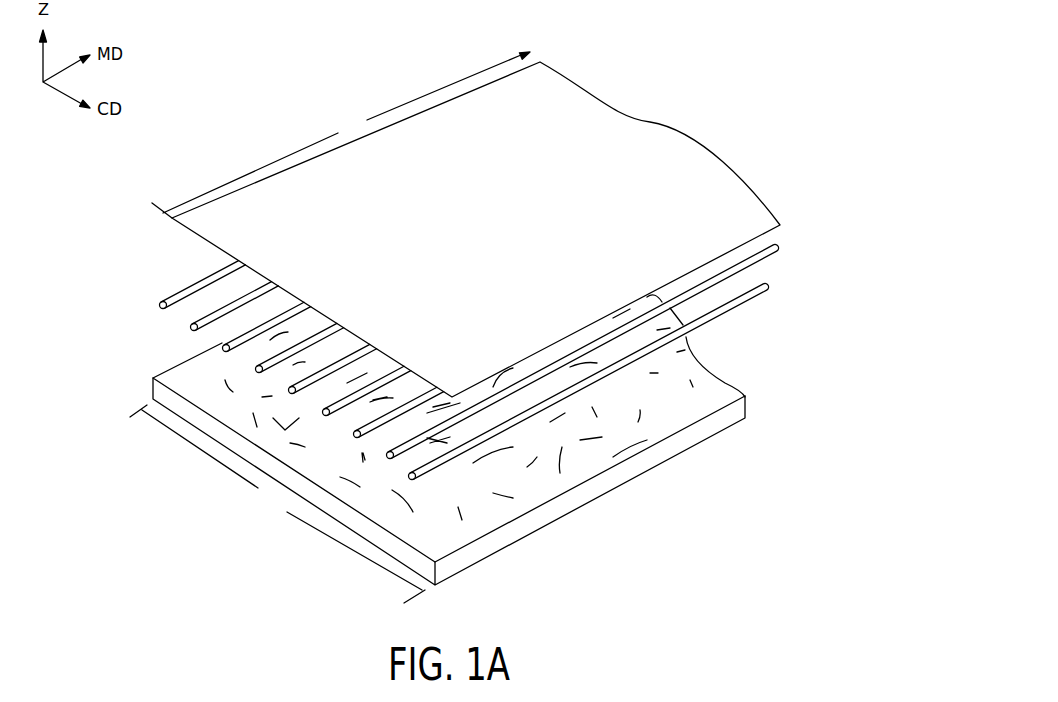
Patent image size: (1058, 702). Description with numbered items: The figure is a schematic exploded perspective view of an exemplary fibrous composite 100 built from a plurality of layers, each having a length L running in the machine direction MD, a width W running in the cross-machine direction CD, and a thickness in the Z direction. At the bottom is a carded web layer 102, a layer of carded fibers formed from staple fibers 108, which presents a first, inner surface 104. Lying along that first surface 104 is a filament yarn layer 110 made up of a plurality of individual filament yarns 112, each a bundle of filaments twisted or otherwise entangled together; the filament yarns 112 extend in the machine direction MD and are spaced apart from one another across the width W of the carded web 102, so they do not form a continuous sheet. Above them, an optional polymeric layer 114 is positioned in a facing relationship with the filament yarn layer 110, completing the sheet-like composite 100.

The composite 100 is at (891, 37).
The carded web layer 102 is at (132, 384).
The first surface 104 is at (207, 386).
The staple fibers 108 is at (682, 410).
The filament yarn layer 110 is at (144, 297).
The filament yarn 112 is at (778, 249).
The polymeric layer 114 is at (146, 223).